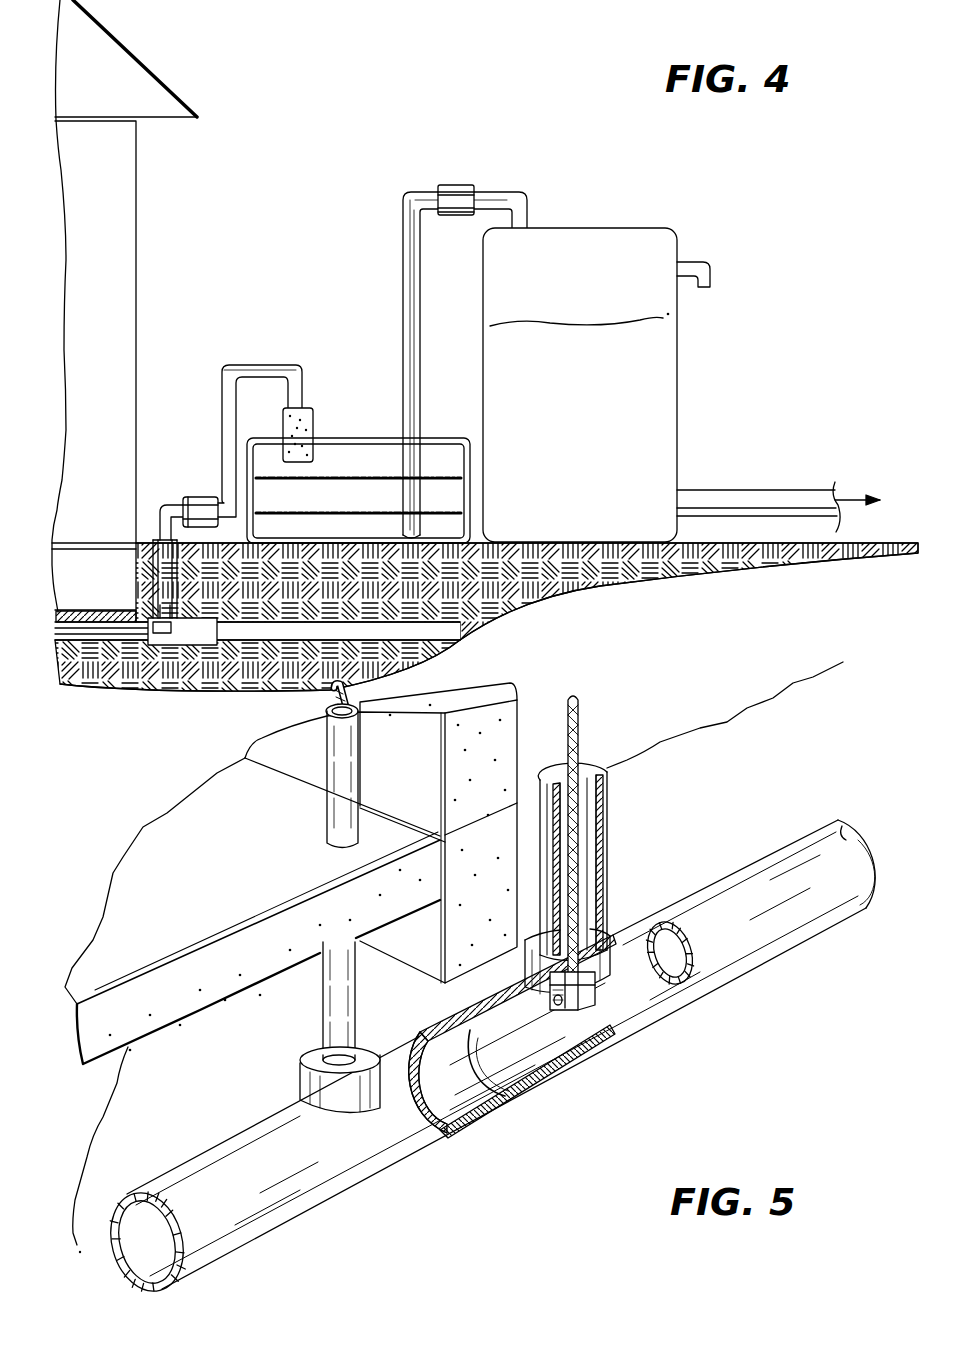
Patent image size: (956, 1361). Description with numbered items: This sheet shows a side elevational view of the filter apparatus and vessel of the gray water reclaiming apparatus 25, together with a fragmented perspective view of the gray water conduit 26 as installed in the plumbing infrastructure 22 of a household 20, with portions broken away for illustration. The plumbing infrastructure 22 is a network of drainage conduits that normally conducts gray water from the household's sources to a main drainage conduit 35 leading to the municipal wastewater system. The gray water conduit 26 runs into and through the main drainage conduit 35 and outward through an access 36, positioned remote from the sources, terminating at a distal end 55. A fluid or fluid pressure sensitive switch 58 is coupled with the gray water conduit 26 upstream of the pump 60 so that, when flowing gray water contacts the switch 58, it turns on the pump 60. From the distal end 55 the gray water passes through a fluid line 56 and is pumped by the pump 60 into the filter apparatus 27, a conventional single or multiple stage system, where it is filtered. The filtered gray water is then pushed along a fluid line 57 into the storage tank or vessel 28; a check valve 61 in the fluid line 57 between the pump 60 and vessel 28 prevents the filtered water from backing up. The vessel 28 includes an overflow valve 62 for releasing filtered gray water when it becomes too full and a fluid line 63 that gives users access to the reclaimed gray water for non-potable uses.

In FIG. 4, the household 20 is at (165, 77).
In FIG. 5, the household 20 is at (527, 702).
In FIG. 5, the plumbing infrastructure 22 is at (323, 811).
In FIG. 4, the apparatus for reclaiming the gray water 25 is at (269, 256).
In FIG. 5, the gray water conduit 26 is at (583, 732).
In FIG. 4, the filter apparatus 27 is at (342, 438).
In FIG. 4, the storage tank or vessel 28 is at (665, 240).
In FIG. 4, the main drainage conduit 35 is at (118, 682).
In FIG. 5, the main drainage conduit 35 is at (737, 957).
In FIG. 5, the access 36 is at (604, 843).
In FIG. 4, the distal end 55 is at (163, 512).
In FIG. 4, the fluid line 56 is at (262, 373).
In FIG. 4, the fluid line 57 is at (407, 304).
In FIG. 4, the fluid or fluid pressure sensitive switch 58 is at (172, 648).
In FIG. 5, the fluid or fluid pressure sensitive switch 58 is at (593, 1000).
In FIG. 4, the pump 60 is at (203, 498).
In FIG. 4, the check valve 61 is at (455, 190).
In FIG. 4, the overflow valve 62 is at (712, 272).
In FIG. 4, the fluid line 63 is at (712, 500).